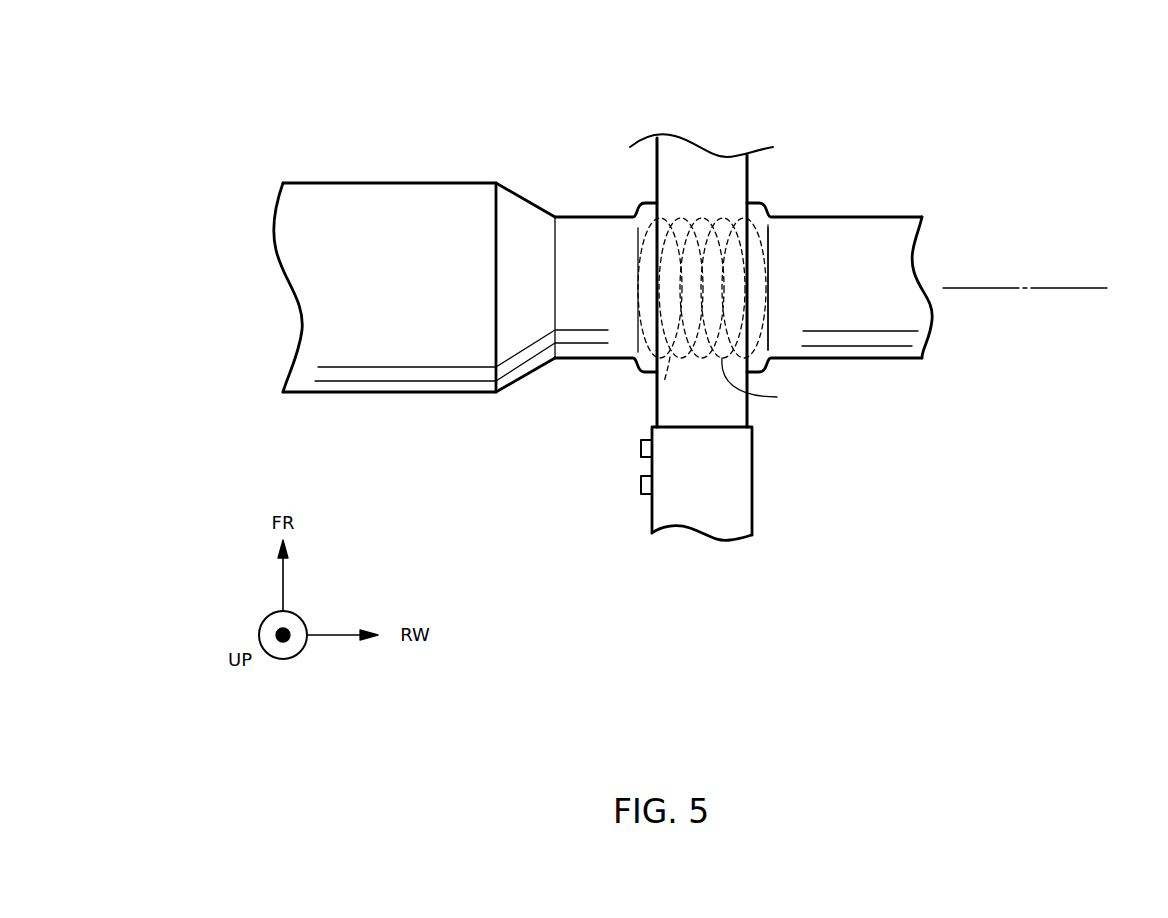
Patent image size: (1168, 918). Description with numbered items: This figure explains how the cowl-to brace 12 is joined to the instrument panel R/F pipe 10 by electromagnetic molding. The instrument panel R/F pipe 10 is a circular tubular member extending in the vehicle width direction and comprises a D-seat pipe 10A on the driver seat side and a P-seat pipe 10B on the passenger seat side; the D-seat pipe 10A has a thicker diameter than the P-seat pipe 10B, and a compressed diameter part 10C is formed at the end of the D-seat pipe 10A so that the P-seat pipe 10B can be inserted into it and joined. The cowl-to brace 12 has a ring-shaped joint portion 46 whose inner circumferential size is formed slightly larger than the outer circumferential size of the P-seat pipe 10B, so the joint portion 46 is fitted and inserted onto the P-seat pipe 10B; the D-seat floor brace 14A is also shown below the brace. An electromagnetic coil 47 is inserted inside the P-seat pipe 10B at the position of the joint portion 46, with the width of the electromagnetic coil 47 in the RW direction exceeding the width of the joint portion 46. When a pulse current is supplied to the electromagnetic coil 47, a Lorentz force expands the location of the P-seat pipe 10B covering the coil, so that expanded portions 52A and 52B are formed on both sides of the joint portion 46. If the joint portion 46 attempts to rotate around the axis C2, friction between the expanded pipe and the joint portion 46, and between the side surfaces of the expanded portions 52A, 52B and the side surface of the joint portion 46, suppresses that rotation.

The instrument panel R/F pipe 10 is at (603, 219).
The D-seat pipe 10A is at (380, 202).
The P-seat pipe 10B is at (866, 233).
The compressed diameter part 10C is at (535, 212).
The cowl-to brace 12 is at (725, 157).
The D-seat floor brace 14A is at (730, 494).
The joint portion 46 is at (769, 382).
The electromagnetic coil 47 is at (662, 393).
The expanded portion 52A is at (617, 240).
The expanded portion 52B is at (783, 233).
The axis C2 is at (1048, 288).